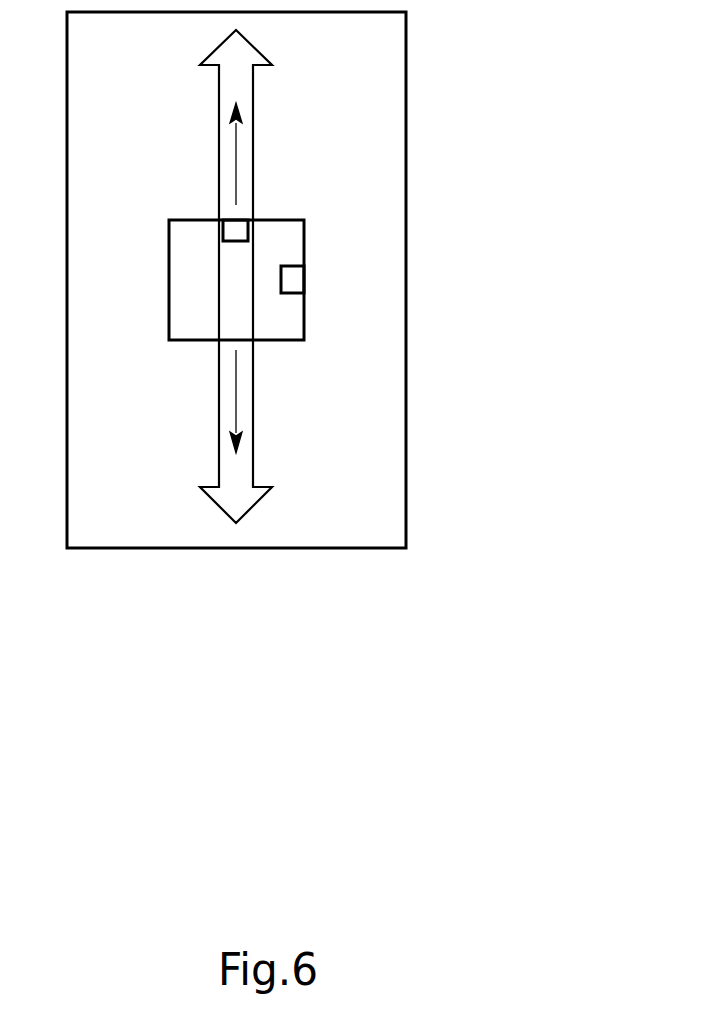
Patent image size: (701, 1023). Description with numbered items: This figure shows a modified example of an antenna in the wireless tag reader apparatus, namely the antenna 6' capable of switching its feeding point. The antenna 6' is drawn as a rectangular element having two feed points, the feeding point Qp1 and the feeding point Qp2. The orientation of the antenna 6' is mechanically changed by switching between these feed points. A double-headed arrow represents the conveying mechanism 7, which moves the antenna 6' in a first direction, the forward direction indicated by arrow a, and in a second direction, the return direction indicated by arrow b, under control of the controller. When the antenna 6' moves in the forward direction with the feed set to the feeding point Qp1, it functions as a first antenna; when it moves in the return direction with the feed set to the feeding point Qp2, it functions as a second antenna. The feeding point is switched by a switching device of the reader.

The feeding point Qp1 is at (232, 232).
The feeding point Qp2 is at (293, 279).
The antenna 6' is at (318, 307).
The conveying mechanism 7 is at (253, 403).